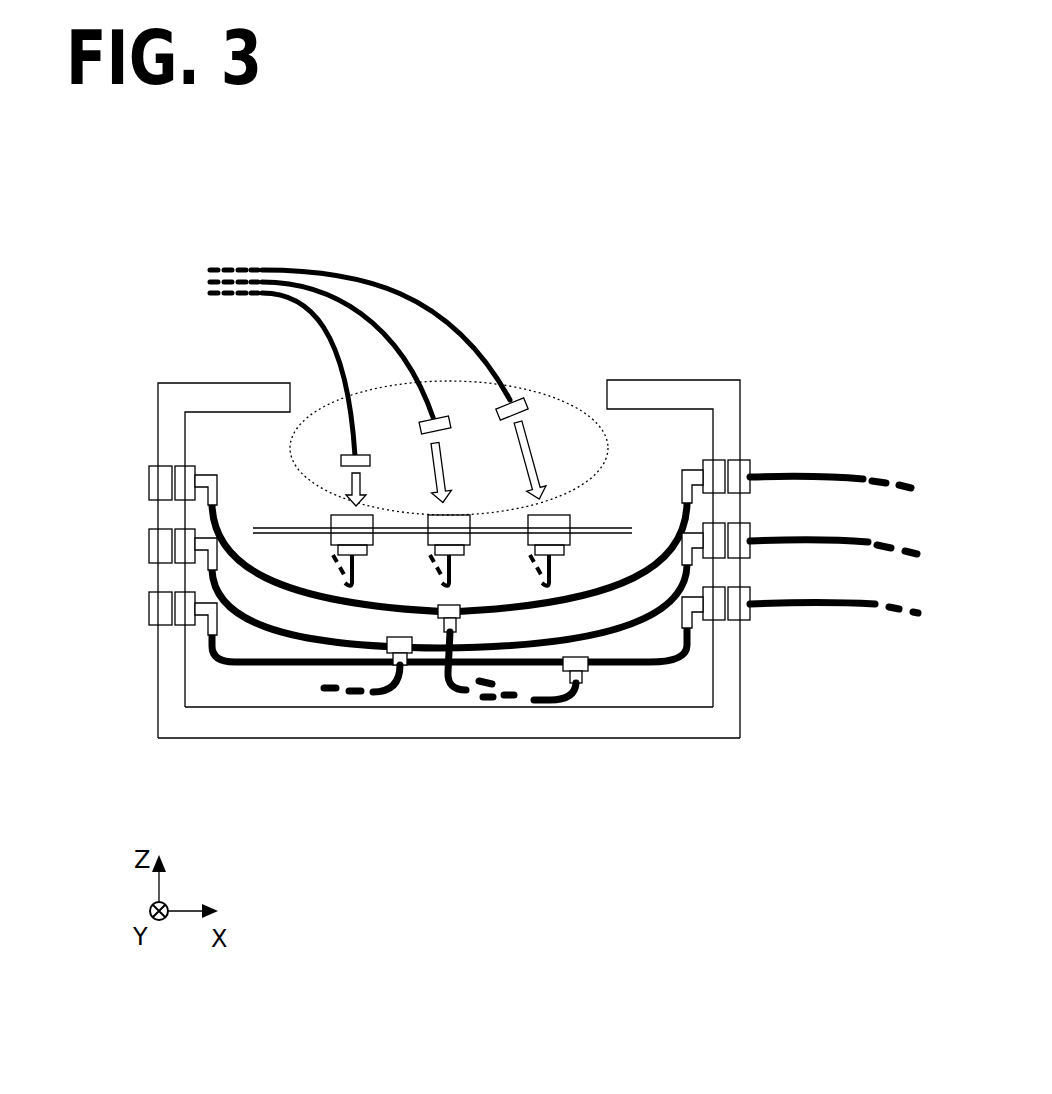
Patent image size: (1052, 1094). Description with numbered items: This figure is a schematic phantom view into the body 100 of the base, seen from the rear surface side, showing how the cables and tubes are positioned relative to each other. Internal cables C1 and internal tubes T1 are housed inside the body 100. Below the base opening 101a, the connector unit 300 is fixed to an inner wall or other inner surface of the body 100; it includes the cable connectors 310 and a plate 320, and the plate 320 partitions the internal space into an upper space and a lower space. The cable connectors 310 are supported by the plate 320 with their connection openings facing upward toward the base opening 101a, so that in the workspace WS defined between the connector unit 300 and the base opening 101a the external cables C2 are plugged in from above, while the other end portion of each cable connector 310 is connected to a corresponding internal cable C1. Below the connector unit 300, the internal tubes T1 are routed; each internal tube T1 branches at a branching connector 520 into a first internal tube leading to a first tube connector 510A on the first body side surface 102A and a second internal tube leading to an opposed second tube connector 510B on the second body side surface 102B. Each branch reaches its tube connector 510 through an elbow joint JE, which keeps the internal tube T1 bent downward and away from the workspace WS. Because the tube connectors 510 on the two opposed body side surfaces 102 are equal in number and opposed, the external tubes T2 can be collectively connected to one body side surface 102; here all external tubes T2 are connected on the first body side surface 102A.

The body 100 is at (452, 770).
The base opening 101a is at (586, 382).
The body side surface 102 is at (450, 537).
The first body side surface 102A is at (740, 398).
The second body side surface 102B is at (158, 402).
The connector unit 300 is at (289, 492).
The cable connector 310 is at (570, 521).
The plate 320 is at (283, 528).
The tube connector 510 is at (455, 581).
The first tube connector 510A is at (748, 621).
The second tube connector 510B is at (152, 625).
The branching connector 520 is at (585, 680).
The internal cable C1 is at (540, 569).
The external cable C2 is at (448, 302).
The workspace WS is at (520, 382).
The elbow joint JE is at (213, 618).
The internal tube T1 is at (545, 704).
The external tube T2 is at (860, 608).